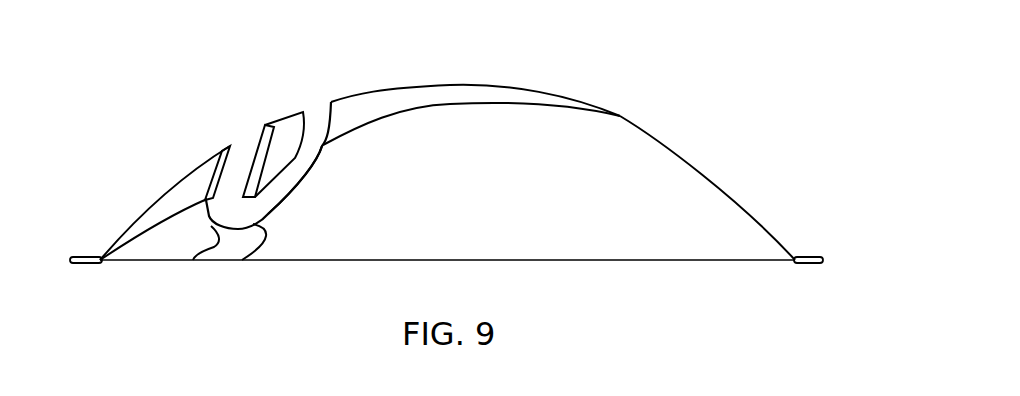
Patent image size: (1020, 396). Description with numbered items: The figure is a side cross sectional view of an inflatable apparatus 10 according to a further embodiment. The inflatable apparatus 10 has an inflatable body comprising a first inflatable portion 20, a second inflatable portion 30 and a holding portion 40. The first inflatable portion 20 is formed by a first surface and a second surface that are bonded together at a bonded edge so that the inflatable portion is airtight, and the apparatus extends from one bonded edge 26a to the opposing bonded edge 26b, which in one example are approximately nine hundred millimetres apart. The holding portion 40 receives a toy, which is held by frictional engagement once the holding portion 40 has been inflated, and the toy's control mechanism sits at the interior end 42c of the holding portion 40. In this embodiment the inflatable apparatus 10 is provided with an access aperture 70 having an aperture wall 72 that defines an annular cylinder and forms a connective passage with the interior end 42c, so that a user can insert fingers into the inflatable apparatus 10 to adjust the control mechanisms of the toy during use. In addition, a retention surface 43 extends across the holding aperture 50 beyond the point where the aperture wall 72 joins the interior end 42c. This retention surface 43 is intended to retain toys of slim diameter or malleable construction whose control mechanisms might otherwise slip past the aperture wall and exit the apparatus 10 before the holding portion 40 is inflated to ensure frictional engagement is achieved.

The inflatable apparatus 10 is at (627, 83).
The first inflatable portion 20 is at (403, 102).
The bonded edge 26a is at (87, 263).
The opposing bonded edge 26b is at (810, 265).
The second inflatable portion 30 is at (650, 180).
The holding portion 40 is at (228, 147).
The interior end 42c is at (207, 212).
The retention surface 43 is at (237, 230).
The holding aperture 50 is at (245, 140).
The access aperture 70 is at (320, 108).
The aperture wall 72 is at (305, 180).